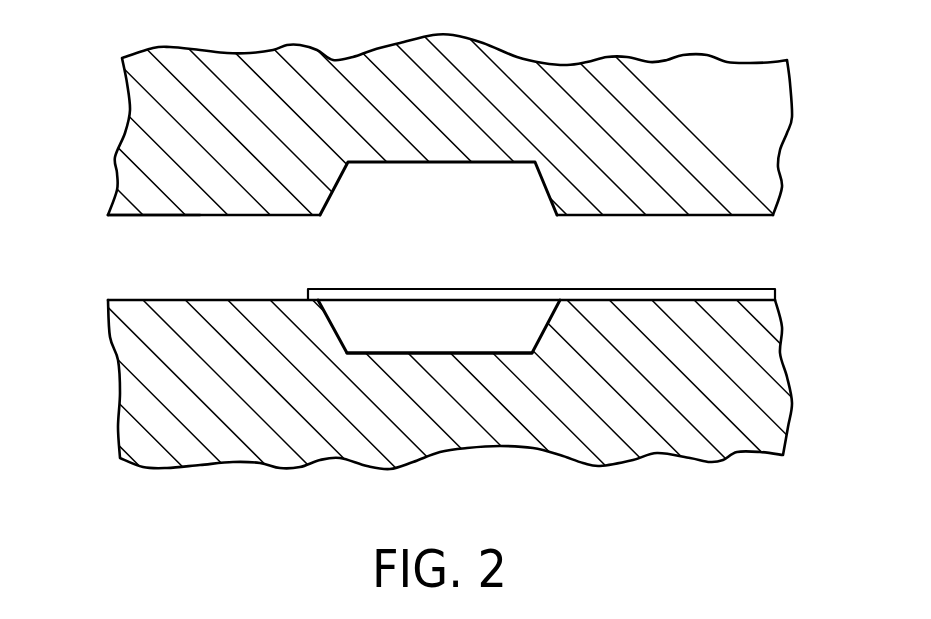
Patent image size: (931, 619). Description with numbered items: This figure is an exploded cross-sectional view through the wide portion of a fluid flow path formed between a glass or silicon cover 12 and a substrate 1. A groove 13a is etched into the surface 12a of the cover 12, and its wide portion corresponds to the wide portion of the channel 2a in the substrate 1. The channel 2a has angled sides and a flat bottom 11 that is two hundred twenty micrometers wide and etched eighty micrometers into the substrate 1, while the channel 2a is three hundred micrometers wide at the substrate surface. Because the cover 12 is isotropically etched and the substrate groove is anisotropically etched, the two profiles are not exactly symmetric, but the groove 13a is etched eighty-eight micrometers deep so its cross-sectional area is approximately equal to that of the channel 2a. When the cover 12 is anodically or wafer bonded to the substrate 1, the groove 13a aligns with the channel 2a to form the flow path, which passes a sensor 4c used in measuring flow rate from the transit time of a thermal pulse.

The cover 12 is at (792, 80).
The groove 13a is at (482, 183).
The surface of cover 12a is at (132, 218).
The substrate 1 is at (782, 360).
The channel 2a is at (377, 313).
The sensor 4c is at (412, 288).
The flat bottom 11 is at (482, 353).